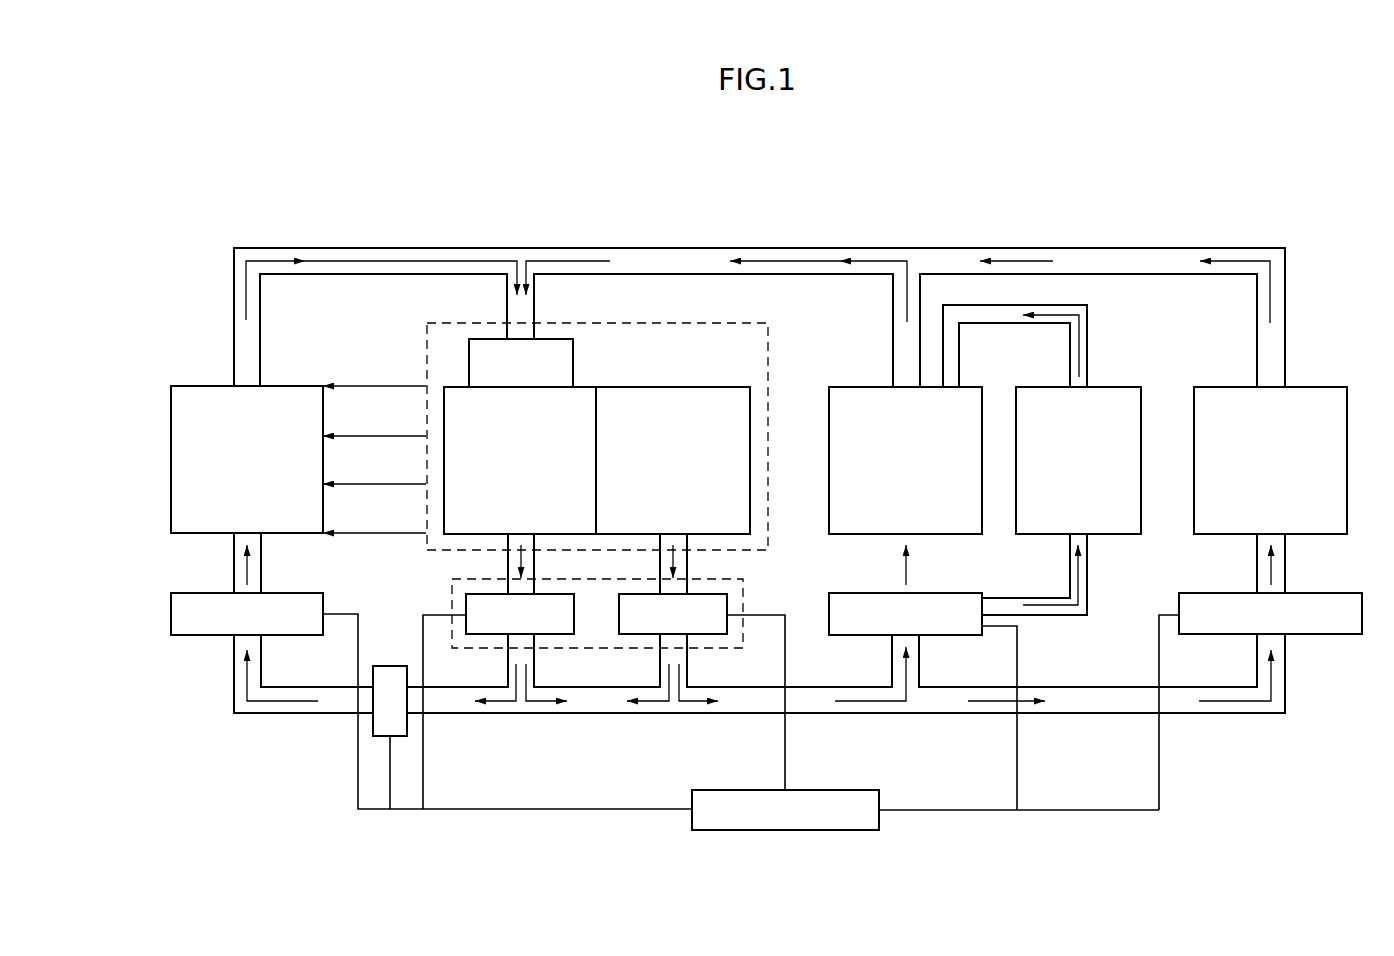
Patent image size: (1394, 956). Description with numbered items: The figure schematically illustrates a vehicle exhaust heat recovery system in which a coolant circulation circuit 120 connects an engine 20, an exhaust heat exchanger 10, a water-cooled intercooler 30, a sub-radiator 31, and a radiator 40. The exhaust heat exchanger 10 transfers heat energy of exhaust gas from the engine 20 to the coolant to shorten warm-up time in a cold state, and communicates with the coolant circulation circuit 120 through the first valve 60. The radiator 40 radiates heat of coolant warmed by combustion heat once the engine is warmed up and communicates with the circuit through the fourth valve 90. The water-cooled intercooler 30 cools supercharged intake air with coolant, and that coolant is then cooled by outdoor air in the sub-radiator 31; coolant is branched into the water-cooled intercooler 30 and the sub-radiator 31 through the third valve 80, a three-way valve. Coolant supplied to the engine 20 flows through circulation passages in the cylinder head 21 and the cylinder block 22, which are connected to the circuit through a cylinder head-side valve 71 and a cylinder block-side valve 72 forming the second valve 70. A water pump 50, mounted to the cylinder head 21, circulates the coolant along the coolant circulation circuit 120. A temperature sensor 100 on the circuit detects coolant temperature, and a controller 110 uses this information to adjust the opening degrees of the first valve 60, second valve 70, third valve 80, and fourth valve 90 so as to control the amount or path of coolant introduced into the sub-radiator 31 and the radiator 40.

The exhaust heat exchanger 10 is at (222, 386).
The engine 20 is at (686, 321).
The cylinder head 21 is at (586, 387).
The cylinder block 22 is at (716, 387).
The water-cooled intercooler 30 is at (856, 387).
The sub-radiator 31 is at (1115, 387).
The radiator 40 is at (1309, 387).
The water pump 50 is at (489, 339).
The first valve 60 is at (205, 635).
The second valve 70 is at (450, 600).
The cylinder head-side valve 71 is at (467, 593).
The cylinder block-side valve 72 is at (719, 594).
The third valve 80 is at (952, 593).
The fourth valve 90 is at (1300, 593).
The temperature sensor 100 is at (372, 727).
The controller 110 is at (882, 798).
The coolant circulation circuit 120 is at (1182, 248).